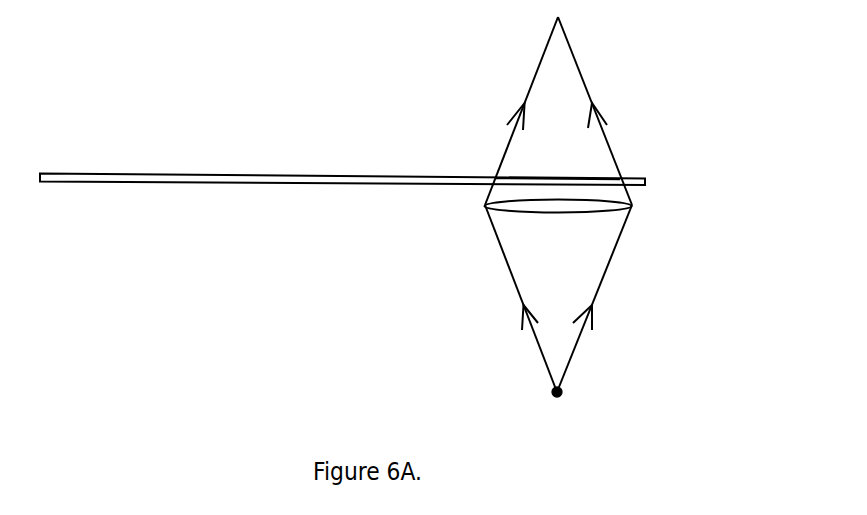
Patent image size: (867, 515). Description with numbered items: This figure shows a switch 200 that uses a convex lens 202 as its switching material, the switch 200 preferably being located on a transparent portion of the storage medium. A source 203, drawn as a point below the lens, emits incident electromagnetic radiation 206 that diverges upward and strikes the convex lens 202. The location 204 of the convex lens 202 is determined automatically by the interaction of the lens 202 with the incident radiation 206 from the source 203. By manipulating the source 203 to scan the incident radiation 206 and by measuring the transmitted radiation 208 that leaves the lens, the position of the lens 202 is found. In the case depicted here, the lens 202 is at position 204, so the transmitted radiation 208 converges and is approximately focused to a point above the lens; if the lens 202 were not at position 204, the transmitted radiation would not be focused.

The switch 200 is at (273, 173).
The convex lens 202 is at (558, 208).
The source 203 is at (553, 400).
The location of the convex lens 204 is at (564, 177).
The incident electromagnetic radiation 206 is at (578, 352).
The transmitted radiation 208 is at (587, 87).